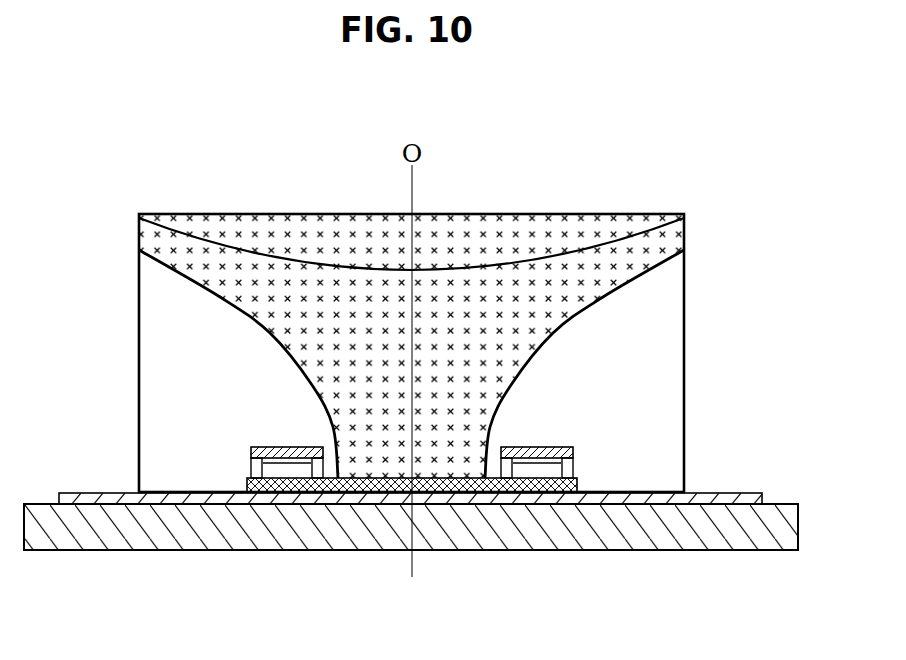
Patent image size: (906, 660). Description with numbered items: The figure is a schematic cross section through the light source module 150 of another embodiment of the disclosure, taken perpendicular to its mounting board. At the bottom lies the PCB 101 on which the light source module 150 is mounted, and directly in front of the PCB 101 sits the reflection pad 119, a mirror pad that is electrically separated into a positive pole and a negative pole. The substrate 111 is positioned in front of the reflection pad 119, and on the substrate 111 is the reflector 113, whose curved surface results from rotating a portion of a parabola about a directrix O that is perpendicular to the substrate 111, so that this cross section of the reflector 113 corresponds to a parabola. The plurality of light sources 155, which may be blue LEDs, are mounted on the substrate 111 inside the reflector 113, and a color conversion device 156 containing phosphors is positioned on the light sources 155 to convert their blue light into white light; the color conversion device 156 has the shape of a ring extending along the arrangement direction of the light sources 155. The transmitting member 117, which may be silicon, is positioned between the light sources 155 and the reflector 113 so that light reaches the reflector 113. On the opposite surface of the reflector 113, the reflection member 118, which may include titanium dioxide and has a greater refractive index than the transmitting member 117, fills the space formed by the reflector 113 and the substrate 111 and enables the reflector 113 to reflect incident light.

The PCB 101 is at (330, 528).
The substrate 111 is at (448, 488).
The reflector 113 is at (613, 290).
The transmitting member 117 is at (684, 369).
The reflection member 118 is at (514, 236).
The reflection pad 119 is at (192, 495).
The light source module 150 is at (183, 172).
The light sources 155 is at (548, 468).
The color conversion device 156 is at (557, 444).